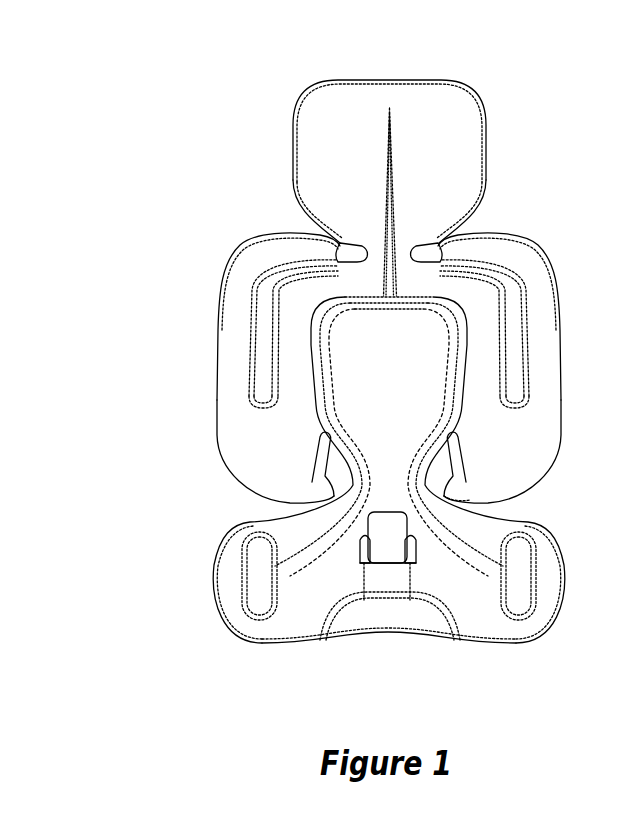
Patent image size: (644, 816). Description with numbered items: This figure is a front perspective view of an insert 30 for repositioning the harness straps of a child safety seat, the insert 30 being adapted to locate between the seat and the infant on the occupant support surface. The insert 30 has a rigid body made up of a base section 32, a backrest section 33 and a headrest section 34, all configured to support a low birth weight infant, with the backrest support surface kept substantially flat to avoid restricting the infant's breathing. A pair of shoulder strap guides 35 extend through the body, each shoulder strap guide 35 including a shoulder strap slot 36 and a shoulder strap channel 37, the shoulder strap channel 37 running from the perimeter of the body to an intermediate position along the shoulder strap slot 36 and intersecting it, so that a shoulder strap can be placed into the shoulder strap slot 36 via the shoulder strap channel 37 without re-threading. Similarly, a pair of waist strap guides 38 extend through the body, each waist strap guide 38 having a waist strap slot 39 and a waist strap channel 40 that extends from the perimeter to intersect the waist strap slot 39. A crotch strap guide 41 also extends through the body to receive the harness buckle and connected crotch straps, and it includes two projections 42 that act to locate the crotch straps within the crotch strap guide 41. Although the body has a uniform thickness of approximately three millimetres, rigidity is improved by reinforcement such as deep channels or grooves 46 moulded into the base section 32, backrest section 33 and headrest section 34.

The insert 30 is at (509, 98).
The base section 32 is at (475, 612).
The backrest section 33 is at (543, 407).
The headrest section 34 is at (488, 148).
The shoulder strap guide 35 is at (462, 231).
The shoulder strap slot 36 is at (300, 272).
The shoulder strap channel 37 is at (337, 242).
The waist strap guide 38 is at (515, 510).
The waist strap slot 39 is at (462, 457).
The waist strap channel 40 is at (454, 494).
The crotch strap guide 41 is at (380, 563).
The projections 42 is at (362, 563).
The grooves 46 is at (262, 333).